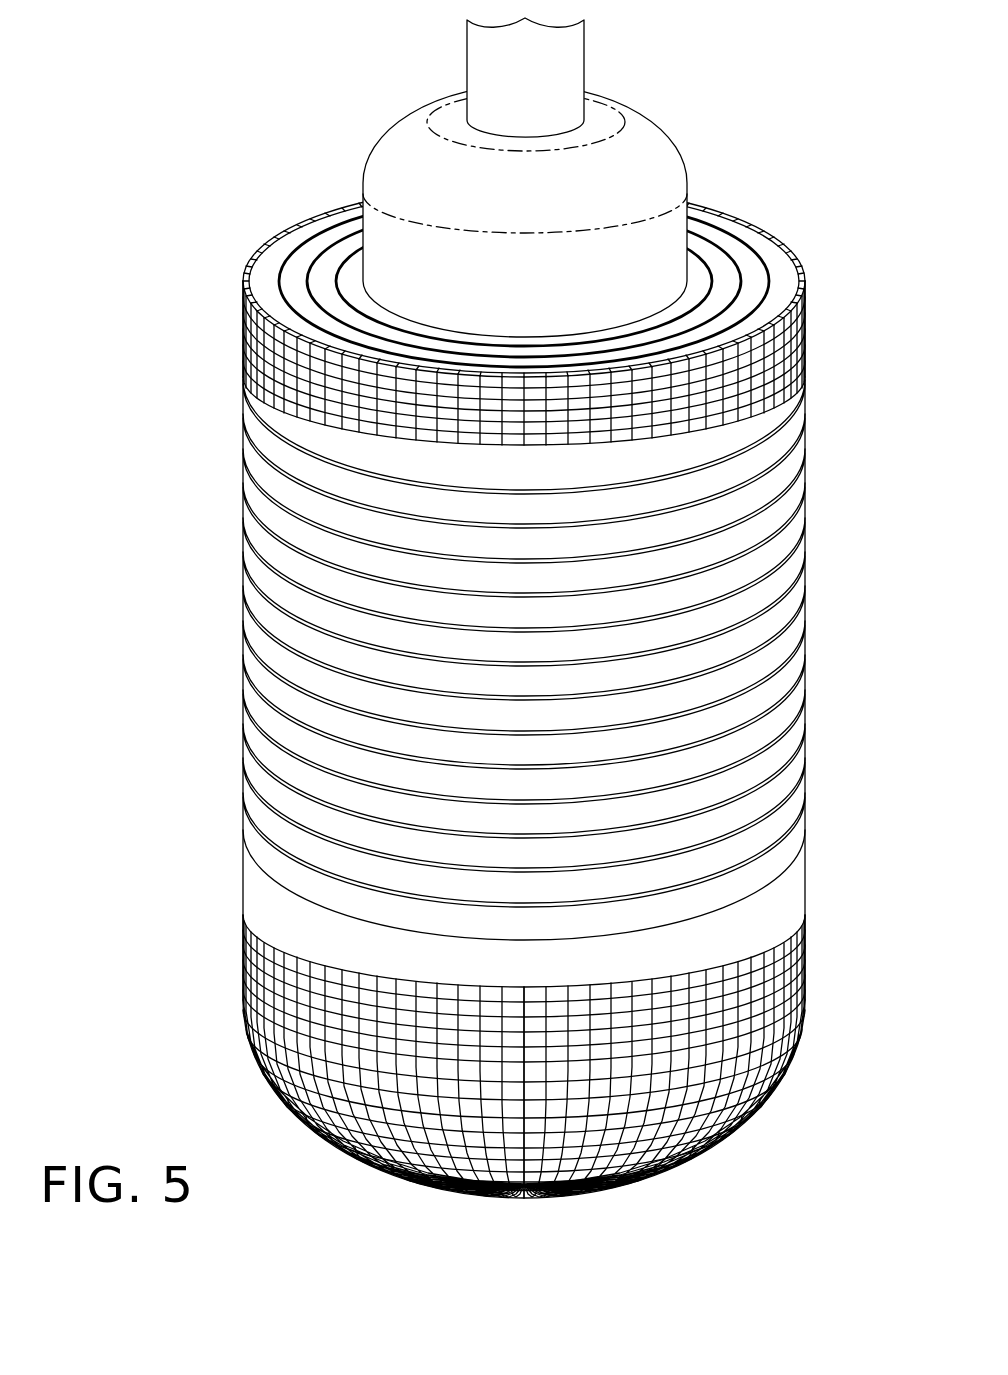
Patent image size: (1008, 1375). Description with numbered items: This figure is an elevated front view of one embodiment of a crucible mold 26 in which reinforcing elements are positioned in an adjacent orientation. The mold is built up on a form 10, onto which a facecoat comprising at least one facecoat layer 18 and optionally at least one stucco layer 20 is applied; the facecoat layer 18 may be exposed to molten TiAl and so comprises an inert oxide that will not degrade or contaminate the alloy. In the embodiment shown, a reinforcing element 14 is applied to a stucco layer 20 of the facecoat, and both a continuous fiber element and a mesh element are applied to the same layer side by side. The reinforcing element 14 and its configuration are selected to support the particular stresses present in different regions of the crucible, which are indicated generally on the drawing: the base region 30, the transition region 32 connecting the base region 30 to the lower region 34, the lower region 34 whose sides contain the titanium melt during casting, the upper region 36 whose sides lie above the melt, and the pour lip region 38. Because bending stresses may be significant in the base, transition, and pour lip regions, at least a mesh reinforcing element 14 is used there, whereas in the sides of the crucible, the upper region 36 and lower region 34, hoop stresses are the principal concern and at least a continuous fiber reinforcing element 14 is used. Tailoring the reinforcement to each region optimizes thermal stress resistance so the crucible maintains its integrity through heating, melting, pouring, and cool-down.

The form 10 is at (536, 293).
The reinforcing element 14 is at (808, 319).
The facecoat layer 18 is at (698, 273).
The stucco layer 20 is at (727, 277).
The crucible mold 26 is at (205, 172).
The base region 30 is at (223, 1192).
The transition region 32 is at (223, 997).
The lower region 34 is at (223, 842).
The upper region 36 is at (223, 560).
The pour lip region 38 is at (223, 354).